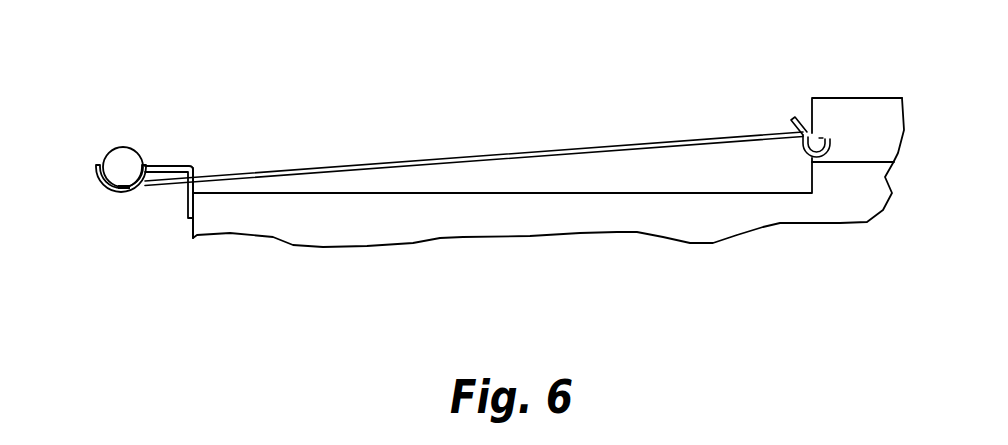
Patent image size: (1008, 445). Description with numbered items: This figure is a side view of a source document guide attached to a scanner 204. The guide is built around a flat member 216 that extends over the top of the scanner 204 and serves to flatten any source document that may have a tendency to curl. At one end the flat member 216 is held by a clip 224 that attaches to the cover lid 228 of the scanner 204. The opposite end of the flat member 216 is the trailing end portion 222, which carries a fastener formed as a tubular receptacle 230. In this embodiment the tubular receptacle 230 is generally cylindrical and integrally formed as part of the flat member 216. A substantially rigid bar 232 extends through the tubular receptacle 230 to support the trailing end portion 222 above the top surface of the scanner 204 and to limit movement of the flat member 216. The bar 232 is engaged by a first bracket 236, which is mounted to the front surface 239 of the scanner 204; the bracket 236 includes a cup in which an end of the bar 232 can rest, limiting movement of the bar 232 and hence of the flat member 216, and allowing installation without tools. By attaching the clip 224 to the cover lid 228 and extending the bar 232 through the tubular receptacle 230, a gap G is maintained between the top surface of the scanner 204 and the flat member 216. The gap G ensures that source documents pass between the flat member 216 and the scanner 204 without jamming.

The scanner 204 is at (815, 225).
The flat member 216 is at (412, 158).
The trailing end portion 222 is at (187, 165).
The clip 224 is at (790, 115).
The cover lid 228 is at (874, 139).
The tubular receptacle 230 is at (125, 145).
The bar 232 is at (128, 173).
The first bracket 236 is at (109, 189).
The front surface 239 is at (193, 237).
The gap G is at (747, 162).